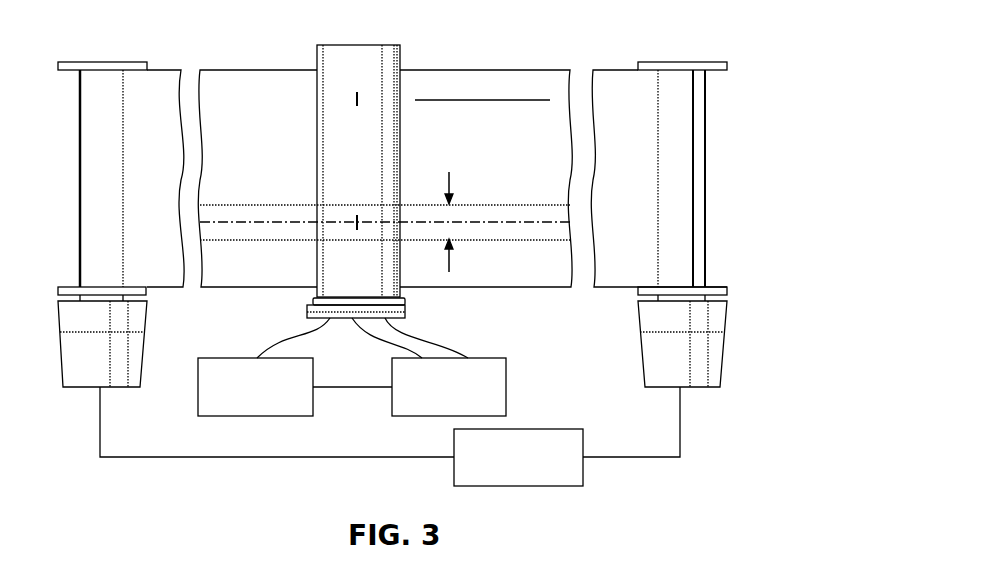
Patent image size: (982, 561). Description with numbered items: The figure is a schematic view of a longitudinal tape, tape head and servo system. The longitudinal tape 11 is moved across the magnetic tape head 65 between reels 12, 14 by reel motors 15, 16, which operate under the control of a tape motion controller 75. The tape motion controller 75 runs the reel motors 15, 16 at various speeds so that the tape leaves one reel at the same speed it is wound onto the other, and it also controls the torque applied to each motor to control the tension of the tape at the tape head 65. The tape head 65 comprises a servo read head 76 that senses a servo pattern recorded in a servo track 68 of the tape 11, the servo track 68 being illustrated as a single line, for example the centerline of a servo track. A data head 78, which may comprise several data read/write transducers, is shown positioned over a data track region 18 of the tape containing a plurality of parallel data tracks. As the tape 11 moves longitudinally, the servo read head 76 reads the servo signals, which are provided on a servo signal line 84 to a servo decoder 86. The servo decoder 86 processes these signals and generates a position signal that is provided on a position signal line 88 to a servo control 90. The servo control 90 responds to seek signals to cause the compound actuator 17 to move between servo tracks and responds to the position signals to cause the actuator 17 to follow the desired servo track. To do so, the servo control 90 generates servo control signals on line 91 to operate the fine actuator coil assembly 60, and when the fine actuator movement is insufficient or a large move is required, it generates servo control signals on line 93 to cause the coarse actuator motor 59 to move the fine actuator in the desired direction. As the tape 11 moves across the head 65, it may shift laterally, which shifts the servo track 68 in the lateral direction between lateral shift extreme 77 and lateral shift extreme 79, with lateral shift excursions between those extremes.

The longitudinal tape 11 is at (243, 70).
The reel 12 is at (95, 62).
The reel 14 is at (675, 62).
The reel motor 15 is at (97, 389).
The reel motor 16 is at (688, 389).
The compound actuator 17 is at (345, 321).
The data track region 18 is at (482, 100).
The coarse actuator motor 59 is at (408, 312).
The fine actuator coil assembly 60 is at (408, 301).
The magnetic tape head 65 is at (311, 297).
The servo track 68 is at (525, 222).
The tape motion controller 75 is at (585, 470).
The servo read head 76 is at (356, 222).
The lateral shift extreme 77 is at (452, 183).
The data head 78 is at (356, 99).
The lateral shift extreme 79 is at (452, 262).
The servo signal line 84 is at (274, 338).
The servo decoder 86 is at (198, 388).
The position signal line 88 is at (352, 389).
The servo control 90 is at (506, 390).
The servo control signal line 91 is at (378, 345).
The servo control signal line 93 is at (462, 346).